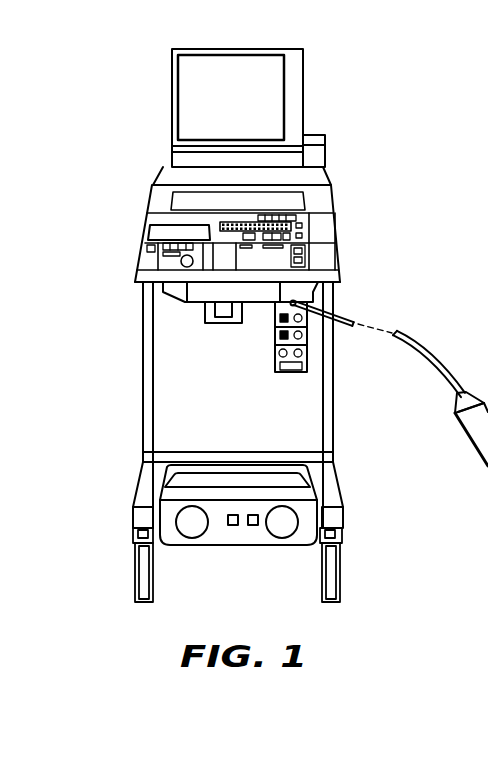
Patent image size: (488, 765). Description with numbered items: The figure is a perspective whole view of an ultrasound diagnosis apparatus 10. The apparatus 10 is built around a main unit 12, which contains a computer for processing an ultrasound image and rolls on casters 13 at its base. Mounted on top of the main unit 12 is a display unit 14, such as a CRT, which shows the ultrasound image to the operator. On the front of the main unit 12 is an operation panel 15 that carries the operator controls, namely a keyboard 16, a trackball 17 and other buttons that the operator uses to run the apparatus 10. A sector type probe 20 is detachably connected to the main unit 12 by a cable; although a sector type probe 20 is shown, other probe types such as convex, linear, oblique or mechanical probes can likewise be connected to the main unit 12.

The ultrasound diagnosis apparatus 10 is at (352, 171).
The main unit 12 is at (333, 259).
The casters 13 is at (153, 590).
The display unit 14 is at (165, 83).
The operation panel 15 is at (148, 232).
The keyboard 16 is at (309, 225).
The trackball 17 is at (182, 266).
The sector type probe 20 is at (472, 445).